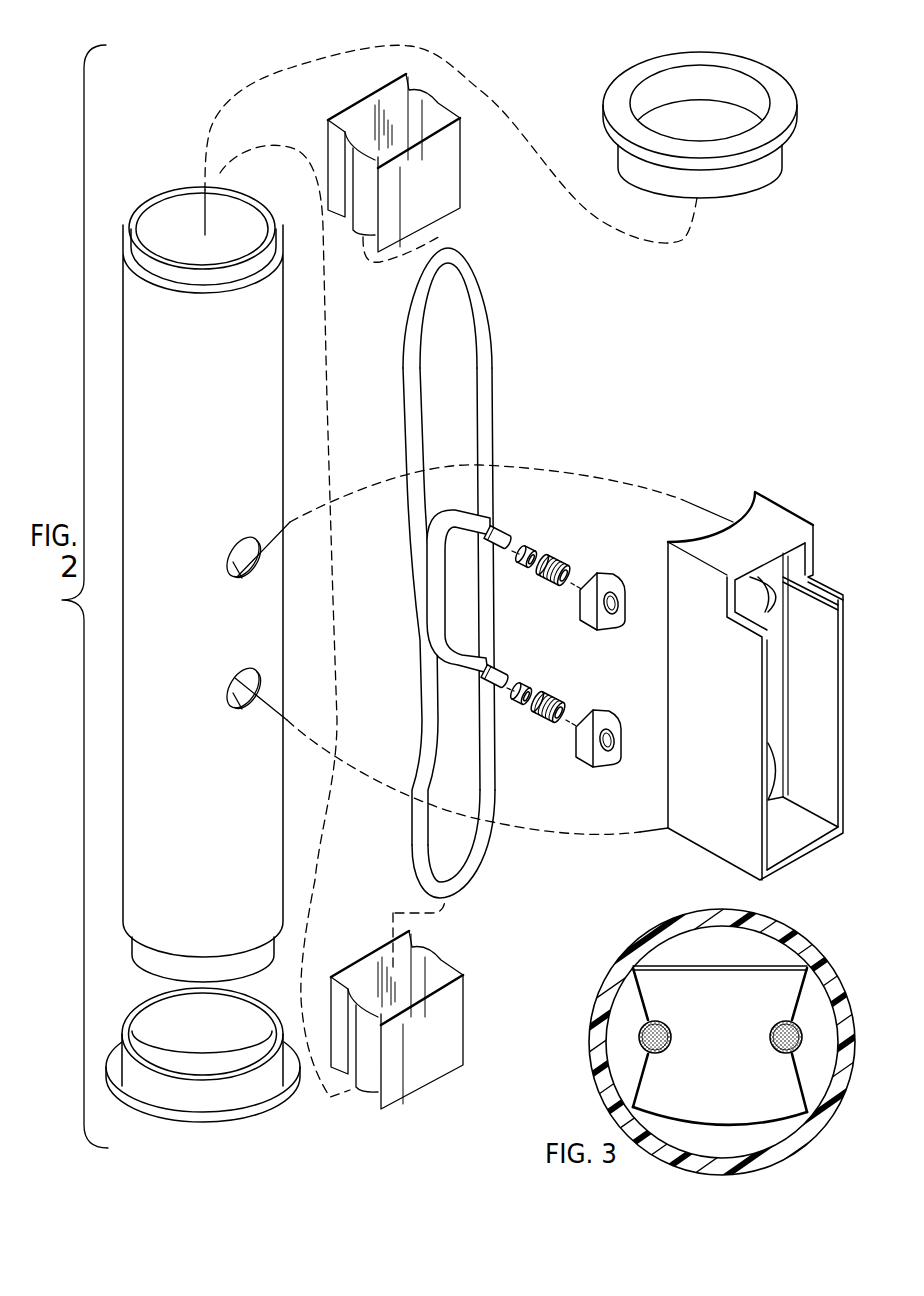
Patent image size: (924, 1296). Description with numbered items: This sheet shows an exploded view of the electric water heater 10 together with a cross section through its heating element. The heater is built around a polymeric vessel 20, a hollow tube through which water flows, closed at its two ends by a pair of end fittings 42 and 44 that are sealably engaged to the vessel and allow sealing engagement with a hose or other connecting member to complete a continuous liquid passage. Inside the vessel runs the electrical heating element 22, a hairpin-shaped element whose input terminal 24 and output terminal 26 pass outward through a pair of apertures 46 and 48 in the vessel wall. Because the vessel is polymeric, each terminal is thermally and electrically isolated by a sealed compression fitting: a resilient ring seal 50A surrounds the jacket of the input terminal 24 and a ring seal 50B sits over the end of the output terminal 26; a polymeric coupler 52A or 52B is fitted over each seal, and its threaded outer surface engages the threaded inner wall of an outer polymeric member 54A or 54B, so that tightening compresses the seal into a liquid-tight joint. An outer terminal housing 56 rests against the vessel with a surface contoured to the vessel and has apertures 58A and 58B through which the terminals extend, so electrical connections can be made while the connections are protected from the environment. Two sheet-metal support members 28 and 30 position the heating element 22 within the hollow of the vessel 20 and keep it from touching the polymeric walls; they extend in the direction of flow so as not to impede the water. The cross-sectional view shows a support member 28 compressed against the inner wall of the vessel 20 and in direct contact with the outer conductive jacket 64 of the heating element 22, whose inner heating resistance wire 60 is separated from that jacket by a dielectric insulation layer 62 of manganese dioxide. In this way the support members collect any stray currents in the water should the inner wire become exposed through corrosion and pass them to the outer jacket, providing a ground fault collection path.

In FIG. 2, the water heater 10 is at (172, 110).
In FIG. 2, the vessel 20 is at (133, 297).
In FIG. 3, the vessel 20 is at (663, 928).
In FIG. 2, the heating element 22 is at (487, 351).
In FIG. 3, the heating element 22 is at (752, 1047).
In FIG. 2, the input terminal 24 is at (502, 530).
In FIG. 2, the output terminal 26 is at (495, 670).
In FIG. 2, the support member 28 is at (442, 187).
In FIG. 3, the support member 28 is at (777, 963).
In FIG. 2, the support member 30 is at (452, 1040).
In FIG. 2, the end fitting 42 is at (770, 78).
In FIG. 2, the end fitting 44 is at (283, 1102).
In FIG. 2, the aperture 46 is at (248, 578).
In FIG. 2, the aperture 48 is at (248, 704).
In FIG. 2, the ring seal 50A is at (528, 545).
In FIG. 2, the ring seal 50B is at (520, 682).
In FIG. 2, the coupler 52A is at (553, 547).
In FIG. 2, the coupler 52B is at (548, 688).
In FIG. 2, the outer polymeric member 54A is at (607, 568).
In FIG. 2, the outer polymeric member 54B is at (607, 704).
In FIG. 2, the terminal housing 56 is at (783, 520).
In FIG. 2, the aperture 58A is at (752, 582).
In FIG. 2, the aperture 58B is at (768, 770).
In FIG. 3, the heating resistance wire 60 is at (780, 1016).
In FIG. 3, the dielectric insulation layer 62 is at (769, 1037).
In FIG. 3, the outer conductive jacket 64 is at (770, 1052).